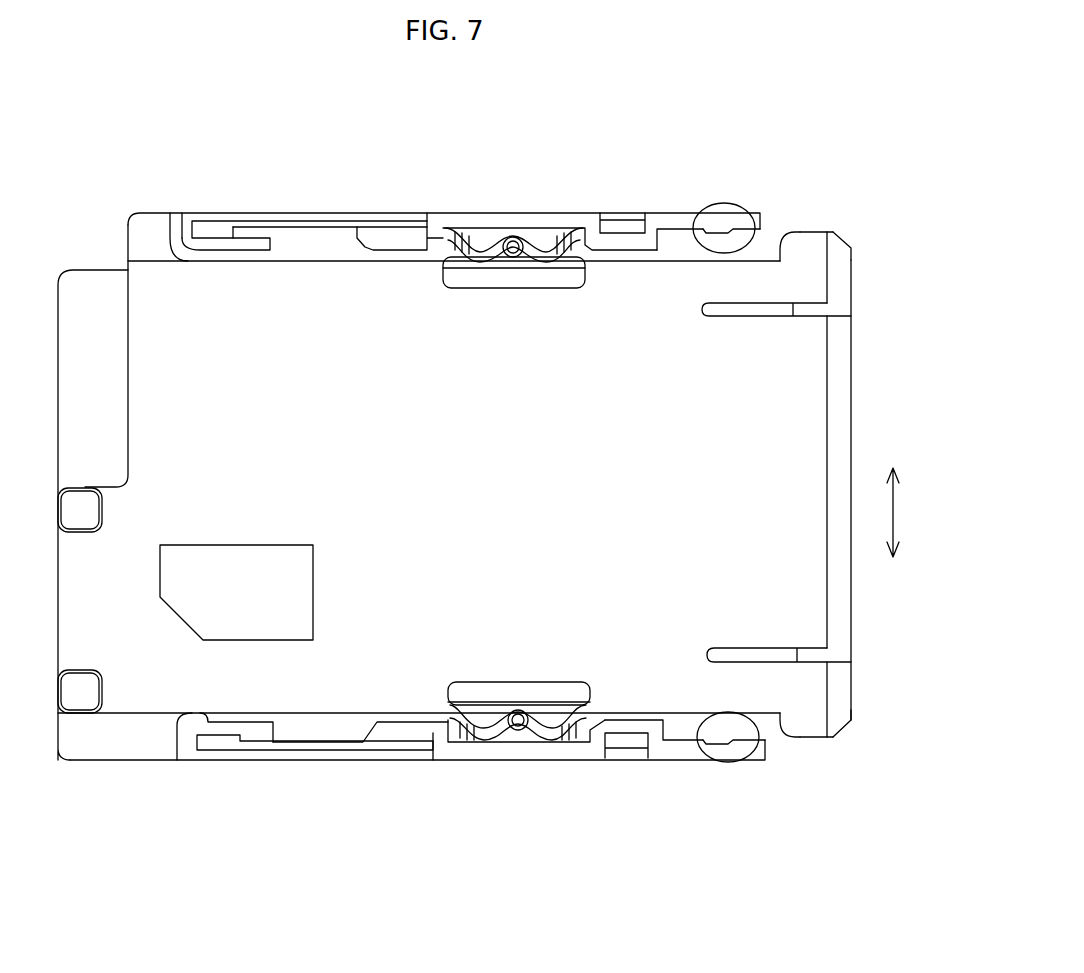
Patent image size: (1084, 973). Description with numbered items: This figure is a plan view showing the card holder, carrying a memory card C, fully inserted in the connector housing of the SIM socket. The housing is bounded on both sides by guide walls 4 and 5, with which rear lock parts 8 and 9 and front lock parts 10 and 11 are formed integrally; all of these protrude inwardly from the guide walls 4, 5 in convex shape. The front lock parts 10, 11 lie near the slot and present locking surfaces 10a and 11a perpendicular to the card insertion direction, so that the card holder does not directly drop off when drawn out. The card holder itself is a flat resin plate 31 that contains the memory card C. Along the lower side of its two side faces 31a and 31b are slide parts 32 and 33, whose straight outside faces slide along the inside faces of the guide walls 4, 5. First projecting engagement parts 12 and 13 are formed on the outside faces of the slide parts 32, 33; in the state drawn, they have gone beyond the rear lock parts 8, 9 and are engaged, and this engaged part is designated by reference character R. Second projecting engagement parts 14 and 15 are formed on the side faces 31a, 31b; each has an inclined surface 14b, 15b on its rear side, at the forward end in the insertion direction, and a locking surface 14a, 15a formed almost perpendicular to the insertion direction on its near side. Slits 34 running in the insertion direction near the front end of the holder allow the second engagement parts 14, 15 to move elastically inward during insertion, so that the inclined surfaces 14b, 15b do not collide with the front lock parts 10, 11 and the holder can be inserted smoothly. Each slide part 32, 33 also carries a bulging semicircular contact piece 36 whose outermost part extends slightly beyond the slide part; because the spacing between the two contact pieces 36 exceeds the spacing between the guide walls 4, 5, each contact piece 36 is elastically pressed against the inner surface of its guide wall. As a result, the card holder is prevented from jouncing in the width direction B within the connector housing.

The memory card C is at (100, 295).
The guide wall 4 is at (453, 210).
The guide wall 5 is at (585, 764).
The rear lock part 8 is at (718, 230).
The rear lock part 9 is at (726, 748).
The front lock part 10 is at (181, 213).
The locking surface 10a is at (213, 248).
The front lock part 11 is at (183, 735).
The locking surface 11a is at (222, 740).
The first projecting engagement part 12 is at (749, 232).
The first projecting engagement part 13 is at (762, 745).
The second projecting engagement part 14 is at (800, 241).
The locking surface 14a is at (773, 240).
The inclined surface 14b is at (840, 238).
The second projecting engagement part 15 is at (818, 728).
The locking surface 15a is at (780, 737).
The inclined surface 15b is at (842, 722).
The resin plate 31 is at (742, 432).
The side face 31a is at (337, 250).
The side face 31b is at (418, 742).
The slide part 32 is at (320, 745).
The slide part 33 is at (300, 242).
The slit 34 is at (835, 305).
The contact piece 36 is at (514, 236).
The engaged part R is at (710, 207).
The width direction B is at (904, 512).